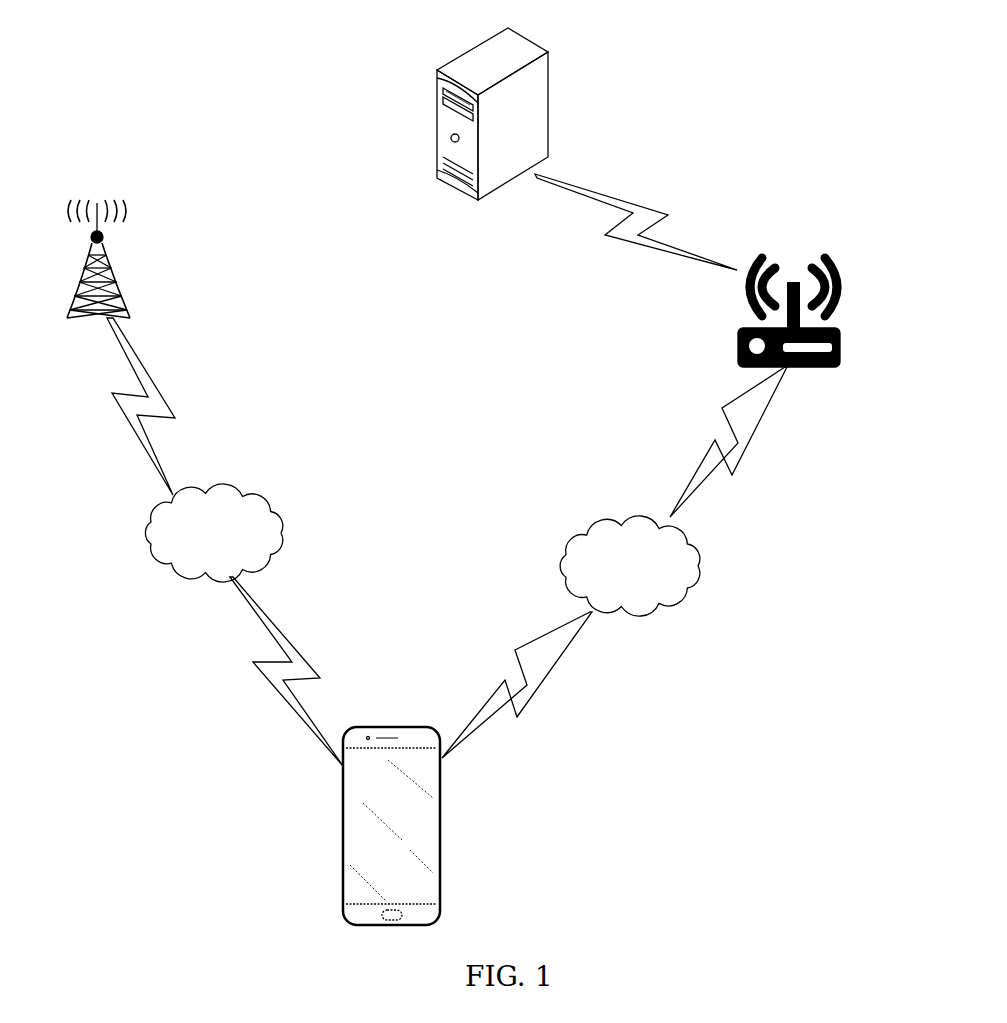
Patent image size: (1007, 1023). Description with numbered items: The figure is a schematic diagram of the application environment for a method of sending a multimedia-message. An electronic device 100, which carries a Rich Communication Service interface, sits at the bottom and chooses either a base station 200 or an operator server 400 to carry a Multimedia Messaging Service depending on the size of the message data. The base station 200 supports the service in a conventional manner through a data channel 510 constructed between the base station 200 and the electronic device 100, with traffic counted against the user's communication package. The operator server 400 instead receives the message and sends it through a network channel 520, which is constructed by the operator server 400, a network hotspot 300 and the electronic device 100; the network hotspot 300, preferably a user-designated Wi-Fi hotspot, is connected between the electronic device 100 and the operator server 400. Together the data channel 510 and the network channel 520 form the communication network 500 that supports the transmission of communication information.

The electronic device 100 is at (372, 726).
The base station 200 is at (113, 263).
The network hotspot 300 is at (838, 266).
The operator server 400 is at (520, 32).
The communication network 500 is at (433, 476).
The data channel 510 is at (234, 483).
The network channel 520 is at (700, 556).